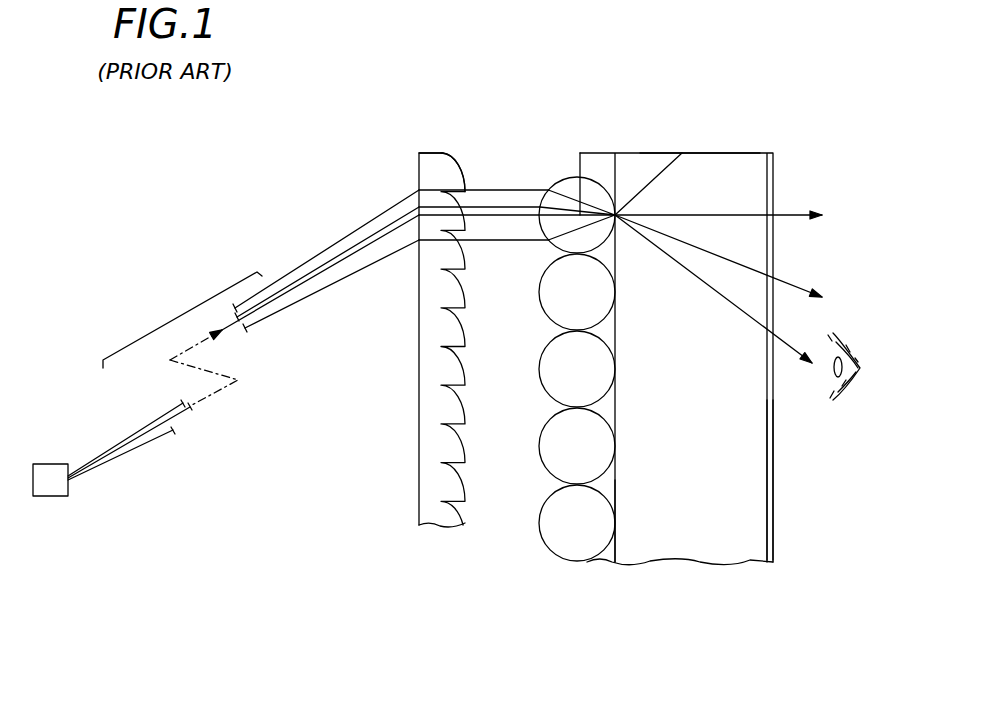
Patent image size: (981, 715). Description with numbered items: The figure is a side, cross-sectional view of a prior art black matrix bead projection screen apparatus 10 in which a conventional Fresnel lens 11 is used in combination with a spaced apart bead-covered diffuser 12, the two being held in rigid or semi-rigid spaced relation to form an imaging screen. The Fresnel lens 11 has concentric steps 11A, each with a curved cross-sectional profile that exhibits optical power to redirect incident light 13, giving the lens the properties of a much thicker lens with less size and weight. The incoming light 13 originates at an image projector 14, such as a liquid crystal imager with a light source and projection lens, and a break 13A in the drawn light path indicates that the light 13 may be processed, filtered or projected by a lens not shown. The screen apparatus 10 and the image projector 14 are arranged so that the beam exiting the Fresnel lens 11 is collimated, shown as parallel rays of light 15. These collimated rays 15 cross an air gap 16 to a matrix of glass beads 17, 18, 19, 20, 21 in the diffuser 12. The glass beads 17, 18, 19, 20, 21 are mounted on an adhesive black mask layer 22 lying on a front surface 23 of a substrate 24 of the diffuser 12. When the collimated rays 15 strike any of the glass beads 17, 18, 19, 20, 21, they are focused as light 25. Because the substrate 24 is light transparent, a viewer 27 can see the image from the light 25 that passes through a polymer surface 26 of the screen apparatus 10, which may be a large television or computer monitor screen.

The screen apparatus 10 is at (607, 72).
The Fresnel lens 11 is at (433, 530).
The concentric steps 11A is at (449, 153).
The diffuser 12 is at (663, 567).
The incoming light 13 is at (360, 213).
The break in the light path 13A is at (182, 313).
The image projector 14 is at (53, 496).
The parallel rays of light 15 is at (518, 248).
The air gap 16 is at (522, 405).
The glass bead 17 is at (547, 243).
The glass bead 18 is at (543, 313).
The glass bead 19 is at (543, 383).
The glass bead 20 is at (542, 463).
The glass bead 21 is at (543, 550).
The adhesive black mask layer 22 is at (580, 153).
The front surface 23 is at (610, 552).
The substrate 24 is at (726, 173).
The focused light 25 is at (596, 213).
The surface 26 is at (775, 473).
The viewer 27 is at (837, 328).